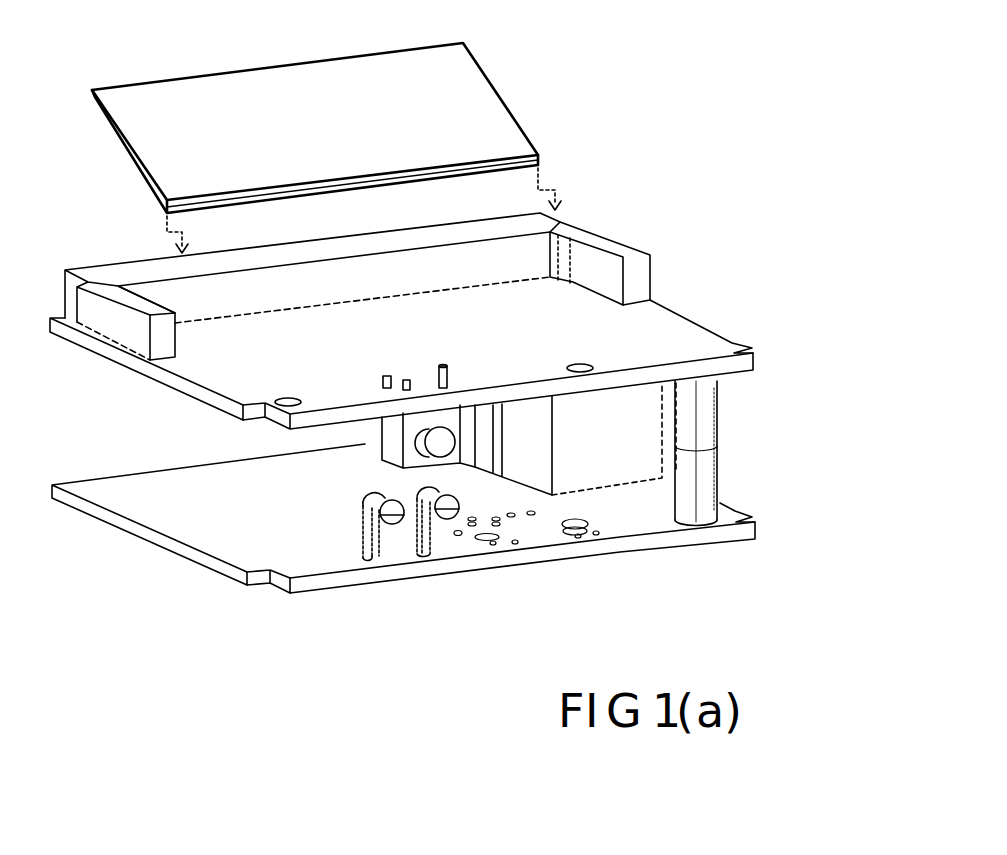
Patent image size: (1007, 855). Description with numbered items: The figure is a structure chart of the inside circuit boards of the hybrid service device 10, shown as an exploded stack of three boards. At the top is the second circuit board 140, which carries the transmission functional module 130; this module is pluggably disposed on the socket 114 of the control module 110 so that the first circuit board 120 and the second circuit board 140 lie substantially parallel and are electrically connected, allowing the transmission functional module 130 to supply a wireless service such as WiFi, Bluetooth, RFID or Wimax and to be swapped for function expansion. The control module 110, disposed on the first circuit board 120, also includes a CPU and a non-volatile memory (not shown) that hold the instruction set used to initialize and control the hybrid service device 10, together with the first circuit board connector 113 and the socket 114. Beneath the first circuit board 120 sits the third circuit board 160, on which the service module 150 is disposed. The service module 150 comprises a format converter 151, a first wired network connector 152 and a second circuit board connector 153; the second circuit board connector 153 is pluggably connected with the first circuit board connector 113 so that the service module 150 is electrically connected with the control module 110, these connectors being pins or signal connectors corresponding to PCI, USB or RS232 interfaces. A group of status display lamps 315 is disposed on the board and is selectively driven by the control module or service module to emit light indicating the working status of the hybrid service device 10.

The hybrid service device 10 is at (668, 124).
The control module 110 is at (684, 258).
The first circuit board connector 113 is at (717, 414).
The socket 114 is at (100, 268).
The first circuit board 120 is at (738, 345).
The transmission functional module 130 is at (522, 130).
The second circuit board 140 is at (496, 74).
The service module 150 is at (171, 578).
The format converter 151 is at (455, 457).
The first wired network connector 152 is at (610, 457).
The second circuit board connector 153 is at (717, 470).
The third circuit board 160 is at (251, 592).
The status display lamps 315 is at (393, 523).